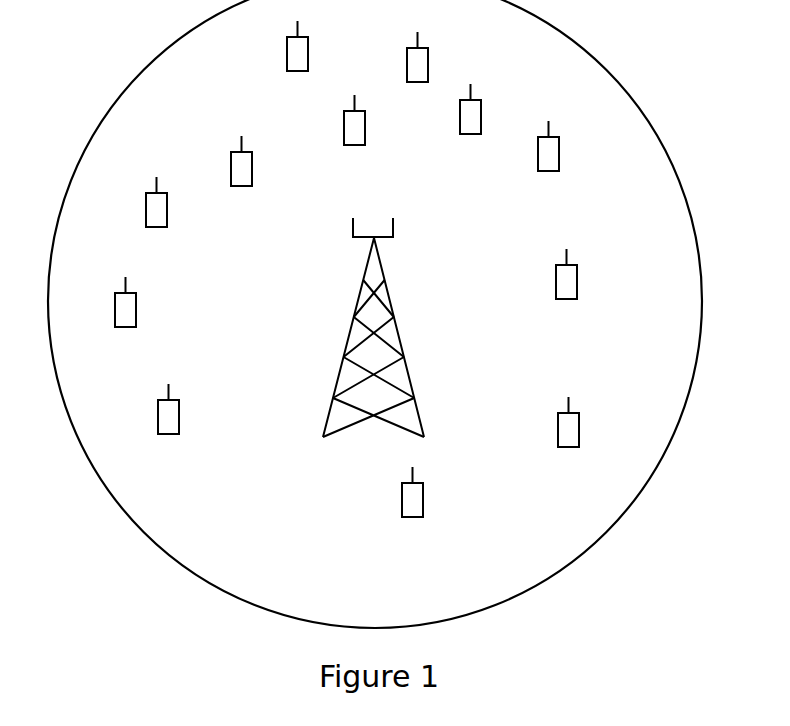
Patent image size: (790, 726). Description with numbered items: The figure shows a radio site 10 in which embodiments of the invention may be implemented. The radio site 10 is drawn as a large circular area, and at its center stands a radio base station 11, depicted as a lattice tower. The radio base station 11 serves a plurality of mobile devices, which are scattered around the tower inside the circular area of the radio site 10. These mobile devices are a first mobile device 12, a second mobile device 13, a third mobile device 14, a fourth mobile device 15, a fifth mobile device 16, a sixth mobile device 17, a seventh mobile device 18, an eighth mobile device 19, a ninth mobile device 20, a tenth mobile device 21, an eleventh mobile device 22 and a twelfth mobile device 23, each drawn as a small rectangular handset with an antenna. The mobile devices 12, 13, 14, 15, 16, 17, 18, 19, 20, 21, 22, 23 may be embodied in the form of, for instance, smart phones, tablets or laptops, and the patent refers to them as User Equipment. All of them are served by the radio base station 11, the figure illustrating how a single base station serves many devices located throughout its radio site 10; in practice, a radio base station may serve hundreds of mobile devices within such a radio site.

The radio site 10 is at (632, 142).
The radio base station 11 is at (392, 317).
The mobile device 12 is at (552, 171).
The mobile device 13 is at (570, 299).
The mobile device 14 is at (572, 447).
The mobile device 15 is at (416, 517).
The mobile device 16 is at (172, 434).
The mobile device 17 is at (129, 327).
The mobile device 18 is at (245, 186).
The mobile device 19 is at (160, 227).
The mobile device 20 is at (301, 71).
The mobile device 21 is at (358, 145).
The mobile device 22 is at (421, 82).
The mobile device 23 is at (474, 134).